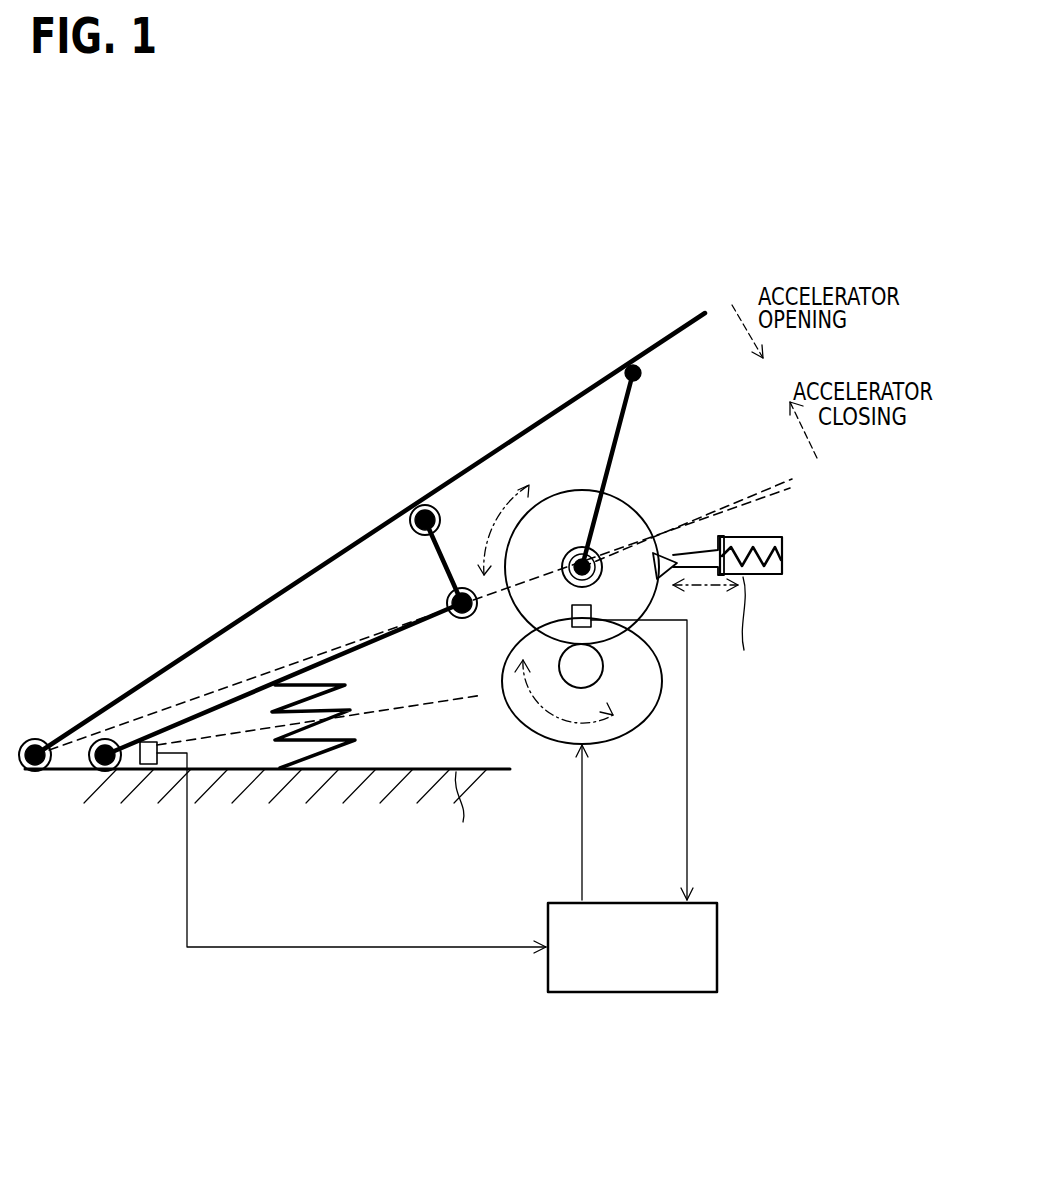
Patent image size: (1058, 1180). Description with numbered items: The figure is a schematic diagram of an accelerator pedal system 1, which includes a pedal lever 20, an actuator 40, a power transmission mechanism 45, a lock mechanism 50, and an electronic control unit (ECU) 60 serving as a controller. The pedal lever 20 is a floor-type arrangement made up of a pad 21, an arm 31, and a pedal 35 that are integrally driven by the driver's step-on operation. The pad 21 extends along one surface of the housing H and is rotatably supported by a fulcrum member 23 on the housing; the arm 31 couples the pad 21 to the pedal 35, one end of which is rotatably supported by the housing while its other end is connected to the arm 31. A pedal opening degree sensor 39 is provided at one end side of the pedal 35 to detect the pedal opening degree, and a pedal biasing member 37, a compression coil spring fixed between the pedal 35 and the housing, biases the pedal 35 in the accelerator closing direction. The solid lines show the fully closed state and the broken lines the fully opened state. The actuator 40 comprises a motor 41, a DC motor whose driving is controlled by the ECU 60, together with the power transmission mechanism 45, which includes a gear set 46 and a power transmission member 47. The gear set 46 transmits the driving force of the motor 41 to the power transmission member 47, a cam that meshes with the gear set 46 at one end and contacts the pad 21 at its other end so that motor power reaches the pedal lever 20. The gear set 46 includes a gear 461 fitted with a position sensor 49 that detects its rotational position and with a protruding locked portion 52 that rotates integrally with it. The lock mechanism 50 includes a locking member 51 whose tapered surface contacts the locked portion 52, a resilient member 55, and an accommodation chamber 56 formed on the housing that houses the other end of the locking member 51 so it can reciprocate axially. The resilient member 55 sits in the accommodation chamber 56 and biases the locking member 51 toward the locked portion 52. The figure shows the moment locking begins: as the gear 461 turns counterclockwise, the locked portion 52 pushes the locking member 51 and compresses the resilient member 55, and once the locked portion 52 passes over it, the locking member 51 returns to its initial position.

The accelerator pedal system 1 is at (108, 942).
The pedal lever 20 is at (361, 542).
The pad 21 is at (285, 587).
The fulcrum member 23 is at (33, 738).
The arm 31 is at (430, 558).
The pedal 35 is at (217, 703).
The pedal biasing member 37 is at (340, 748).
The pedal opening degree sensor 39 is at (147, 766).
The actuator 40 is at (582, 759).
The motor 41 is at (548, 745).
The power transmission mechanism 45 is at (594, 466).
The gear set 46 is at (568, 483).
The gear 461 is at (575, 512).
The power transmission member 47 is at (612, 427).
The position sensor 49 is at (572, 616).
The lock mechanism 50 is at (755, 560).
The locking member 51 is at (707, 547).
The locked portion 52 is at (665, 562).
The resilient member 55 is at (748, 547).
The accommodation chamber 56 is at (762, 568).
The electronic control unit (ECU) 60 is at (718, 925).